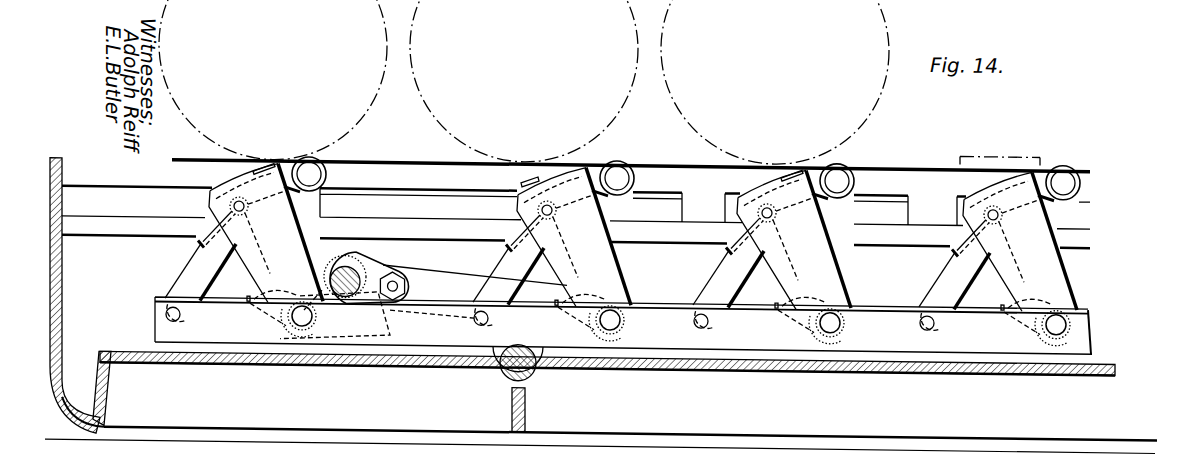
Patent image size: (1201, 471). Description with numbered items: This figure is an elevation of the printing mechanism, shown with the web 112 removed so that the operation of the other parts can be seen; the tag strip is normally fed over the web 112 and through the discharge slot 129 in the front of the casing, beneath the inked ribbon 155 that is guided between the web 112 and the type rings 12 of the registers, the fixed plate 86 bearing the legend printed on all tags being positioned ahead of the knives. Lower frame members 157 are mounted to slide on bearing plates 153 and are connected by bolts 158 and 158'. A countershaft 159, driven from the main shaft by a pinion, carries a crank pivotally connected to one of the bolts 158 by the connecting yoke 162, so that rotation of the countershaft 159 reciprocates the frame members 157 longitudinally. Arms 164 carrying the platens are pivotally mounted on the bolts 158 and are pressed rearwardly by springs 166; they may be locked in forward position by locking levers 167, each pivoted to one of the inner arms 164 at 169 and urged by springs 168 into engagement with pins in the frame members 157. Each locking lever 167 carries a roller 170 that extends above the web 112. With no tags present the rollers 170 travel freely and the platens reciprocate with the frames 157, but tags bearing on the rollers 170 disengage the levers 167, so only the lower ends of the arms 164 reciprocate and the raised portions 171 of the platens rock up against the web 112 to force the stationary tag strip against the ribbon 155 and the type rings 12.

The type rings 12 is at (196, 126).
The fixed plate 86 is at (996, 144).
The web 112 is at (709, 159).
The discharge slot 129 is at (56, 158).
The bearing plates 153 is at (1080, 346).
The inked ribbon 155 is at (186, 157).
The lower frame members 157 is at (760, 332).
The bolts 158 is at (675, 329).
The bolts 158' is at (566, 358).
The countershaft 159 is at (345, 294).
The connecting yoke 162 is at (435, 285).
The arms 164 is at (1010, 250).
The springs 166 is at (1080, 292).
The locking levers 167 is at (191, 254).
The springs 168 is at (208, 240).
The pivot 169 is at (553, 204).
The roller 170 is at (329, 171).
The raised portions 171 is at (253, 166).